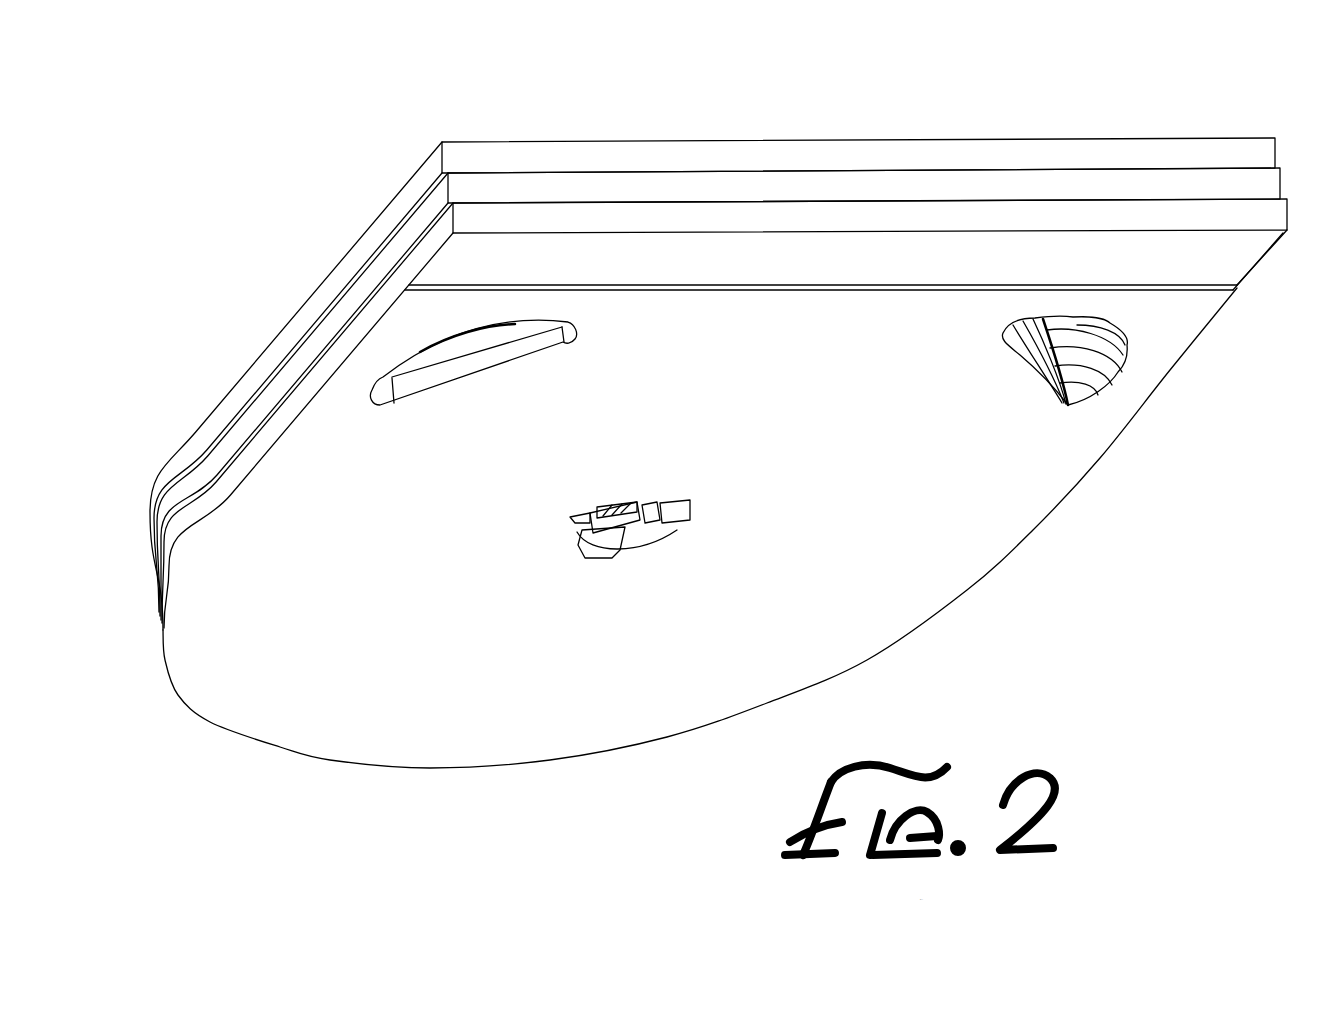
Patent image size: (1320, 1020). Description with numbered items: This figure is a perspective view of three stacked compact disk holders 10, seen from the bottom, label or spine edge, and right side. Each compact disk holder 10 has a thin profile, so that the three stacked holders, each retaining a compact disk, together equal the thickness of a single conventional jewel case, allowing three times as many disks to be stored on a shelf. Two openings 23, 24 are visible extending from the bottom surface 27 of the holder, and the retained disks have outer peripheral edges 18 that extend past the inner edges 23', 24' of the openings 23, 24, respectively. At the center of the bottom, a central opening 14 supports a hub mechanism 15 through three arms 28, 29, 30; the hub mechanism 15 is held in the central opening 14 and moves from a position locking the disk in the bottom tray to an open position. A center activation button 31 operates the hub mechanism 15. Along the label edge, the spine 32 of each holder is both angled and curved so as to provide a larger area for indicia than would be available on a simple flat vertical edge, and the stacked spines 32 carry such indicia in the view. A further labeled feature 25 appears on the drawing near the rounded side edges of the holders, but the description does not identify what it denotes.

The compact disk holder 10 is at (357, 328).
The central opening 14 is at (650, 530).
The hub mechanism 15 is at (556, 552).
The outer peripheral edges 18 is at (1043, 345).
The opening 23 is at (1139, 358).
The inner edge 23' is at (1145, 379).
The opening 24 is at (500, 362).
The inner edge 24' is at (478, 406).
The rounded edge 25 is at (207, 512).
The bottom surface 27 is at (943, 567).
The arm 28 is at (590, 513).
The arm 29 is at (690, 508).
The arm 30 is at (605, 555).
The center activation button 31 is at (655, 502).
The spine 32 is at (1167, 222).